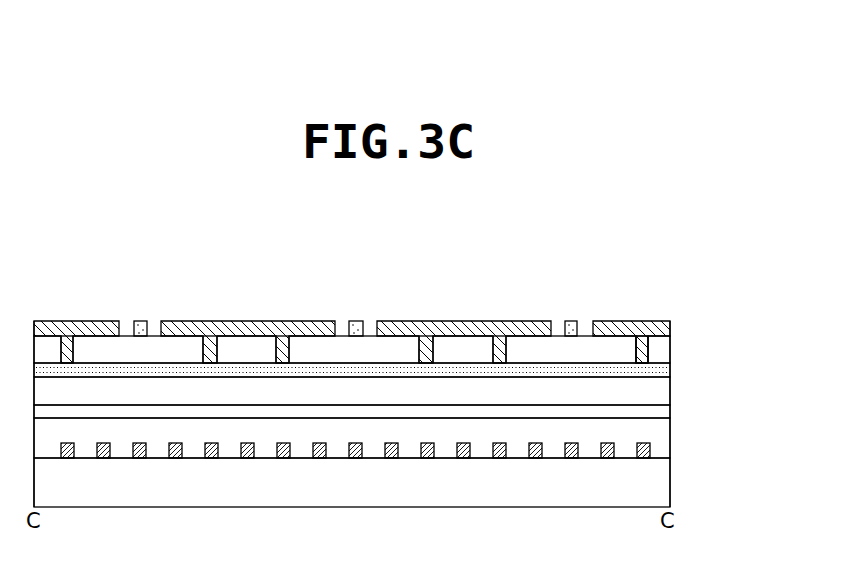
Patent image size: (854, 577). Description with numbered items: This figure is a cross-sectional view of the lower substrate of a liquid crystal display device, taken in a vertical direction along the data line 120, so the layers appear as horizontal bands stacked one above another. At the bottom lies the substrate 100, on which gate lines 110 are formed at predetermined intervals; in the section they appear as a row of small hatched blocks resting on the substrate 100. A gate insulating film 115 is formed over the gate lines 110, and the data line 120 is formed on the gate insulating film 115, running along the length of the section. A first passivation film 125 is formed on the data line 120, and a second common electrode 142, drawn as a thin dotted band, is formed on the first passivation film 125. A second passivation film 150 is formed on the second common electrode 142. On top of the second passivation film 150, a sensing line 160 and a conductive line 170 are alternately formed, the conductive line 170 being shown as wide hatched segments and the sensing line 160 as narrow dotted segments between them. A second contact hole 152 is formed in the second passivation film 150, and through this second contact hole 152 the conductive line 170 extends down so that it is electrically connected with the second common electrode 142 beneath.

The substrate 100 is at (665, 483).
The gate lines 110 is at (648, 452).
The gate insulating film 115 is at (665, 427).
The data line 120 is at (663, 416).
The first passivation film 125 is at (663, 389).
The second common electrode 142 is at (663, 372).
The second passivation film 150 is at (663, 343).
The second contact hole 152 is at (643, 331).
The sensing line 160 is at (140, 328).
The conductive line 170 is at (71, 328).